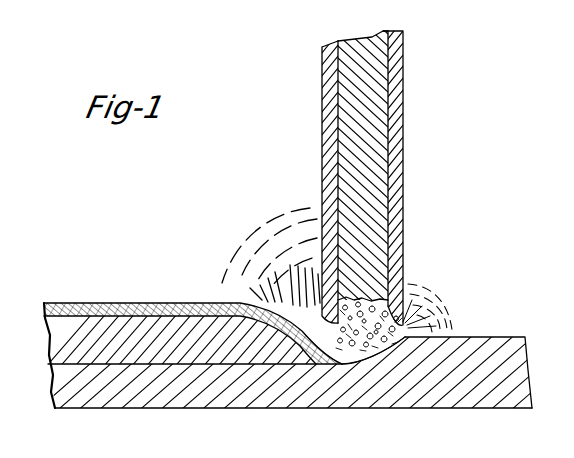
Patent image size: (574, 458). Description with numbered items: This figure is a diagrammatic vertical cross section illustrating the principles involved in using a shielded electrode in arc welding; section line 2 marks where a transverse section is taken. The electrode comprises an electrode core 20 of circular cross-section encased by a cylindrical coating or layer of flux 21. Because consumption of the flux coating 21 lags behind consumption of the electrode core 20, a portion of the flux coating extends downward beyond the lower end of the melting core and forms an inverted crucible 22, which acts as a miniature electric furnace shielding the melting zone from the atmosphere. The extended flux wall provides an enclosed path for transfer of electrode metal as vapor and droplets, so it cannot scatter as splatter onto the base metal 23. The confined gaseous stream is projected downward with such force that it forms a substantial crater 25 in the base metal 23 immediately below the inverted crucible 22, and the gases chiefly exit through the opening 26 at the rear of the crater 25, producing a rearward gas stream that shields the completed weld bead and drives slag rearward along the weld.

The section line 2- 2 is at (452, 172).
The electrode core 20 is at (380, 200).
The flux coating 21 is at (403, 218).
The inverted crucible 22 is at (366, 326).
The base metal 23 is at (493, 342).
The crater 25 is at (330, 350).
The opening 26 is at (268, 306).